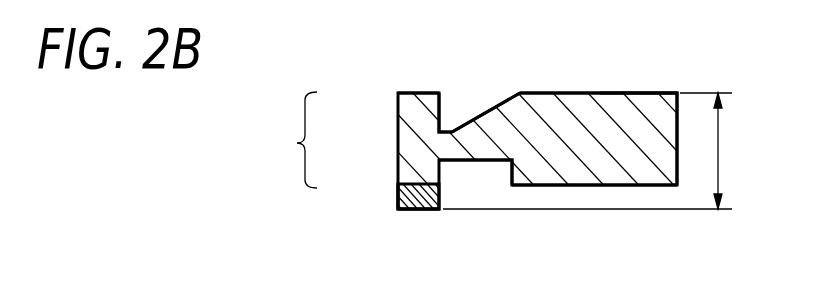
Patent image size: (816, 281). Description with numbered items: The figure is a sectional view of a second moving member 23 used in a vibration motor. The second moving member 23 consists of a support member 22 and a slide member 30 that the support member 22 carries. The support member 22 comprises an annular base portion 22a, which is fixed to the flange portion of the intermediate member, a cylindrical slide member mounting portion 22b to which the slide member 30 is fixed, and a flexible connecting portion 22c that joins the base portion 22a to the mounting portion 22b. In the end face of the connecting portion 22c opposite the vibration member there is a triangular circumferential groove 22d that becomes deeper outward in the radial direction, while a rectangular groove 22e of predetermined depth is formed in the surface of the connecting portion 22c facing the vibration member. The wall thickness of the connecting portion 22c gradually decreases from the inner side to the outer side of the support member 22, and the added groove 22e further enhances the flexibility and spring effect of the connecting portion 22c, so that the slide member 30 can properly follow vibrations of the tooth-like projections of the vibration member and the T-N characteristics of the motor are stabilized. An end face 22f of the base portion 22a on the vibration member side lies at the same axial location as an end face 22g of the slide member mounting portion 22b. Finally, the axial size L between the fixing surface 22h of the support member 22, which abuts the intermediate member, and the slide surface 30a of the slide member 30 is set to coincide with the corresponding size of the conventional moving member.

The support member 22 is at (386, 115).
The second moving member 23 is at (288, 158).
The slide member 30 is at (397, 185).
The base portion 22a is at (578, 122).
The slide member mounting portion 22b is at (409, 92).
The connecting portion 22c is at (482, 138).
The circumferential groove 22d is at (450, 120).
The rectangular groove 22e is at (486, 168).
The end face of the base portion 22f is at (627, 187).
The end face of the slide member mounting portion 22g is at (400, 195).
The fixing surface 22h is at (633, 92).
The slide surface 30a is at (423, 210).
The axial size L is at (587, 151).